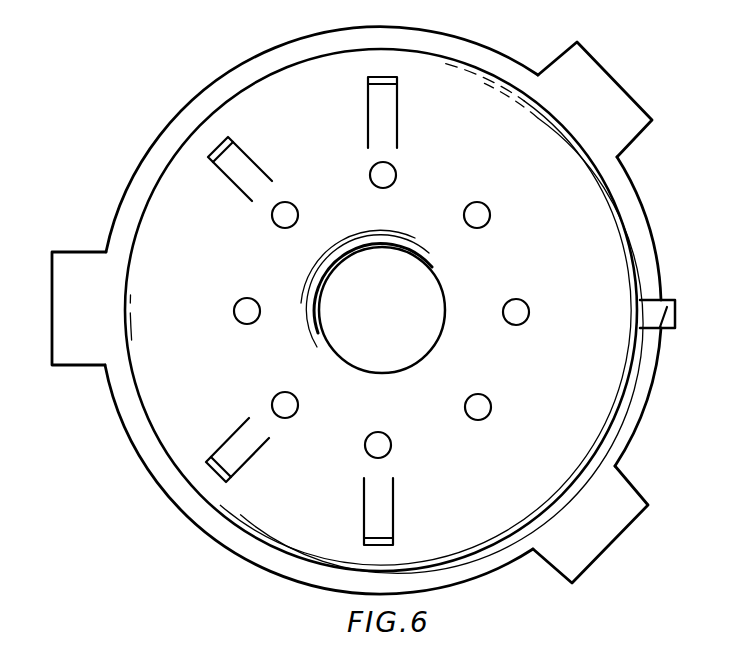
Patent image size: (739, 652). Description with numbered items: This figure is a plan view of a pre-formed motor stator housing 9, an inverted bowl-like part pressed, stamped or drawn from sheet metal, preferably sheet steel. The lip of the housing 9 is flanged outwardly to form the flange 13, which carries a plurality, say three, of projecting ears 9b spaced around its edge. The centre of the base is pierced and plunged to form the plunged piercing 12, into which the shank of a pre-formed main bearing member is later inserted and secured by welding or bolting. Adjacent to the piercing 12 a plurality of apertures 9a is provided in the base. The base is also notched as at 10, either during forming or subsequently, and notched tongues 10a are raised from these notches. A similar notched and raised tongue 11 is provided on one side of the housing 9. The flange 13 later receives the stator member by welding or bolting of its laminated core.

The motor stator housing 9 is at (384, 311).
The apertures 9a is at (479, 222).
The projecting ears 9b is at (352, 312).
The notches 10 is at (228, 166).
The notched tongues 10a is at (231, 141).
The notched and raised tongue 11 is at (660, 319).
The plunged piercing 12 is at (418, 363).
The flange 13 is at (641, 209).